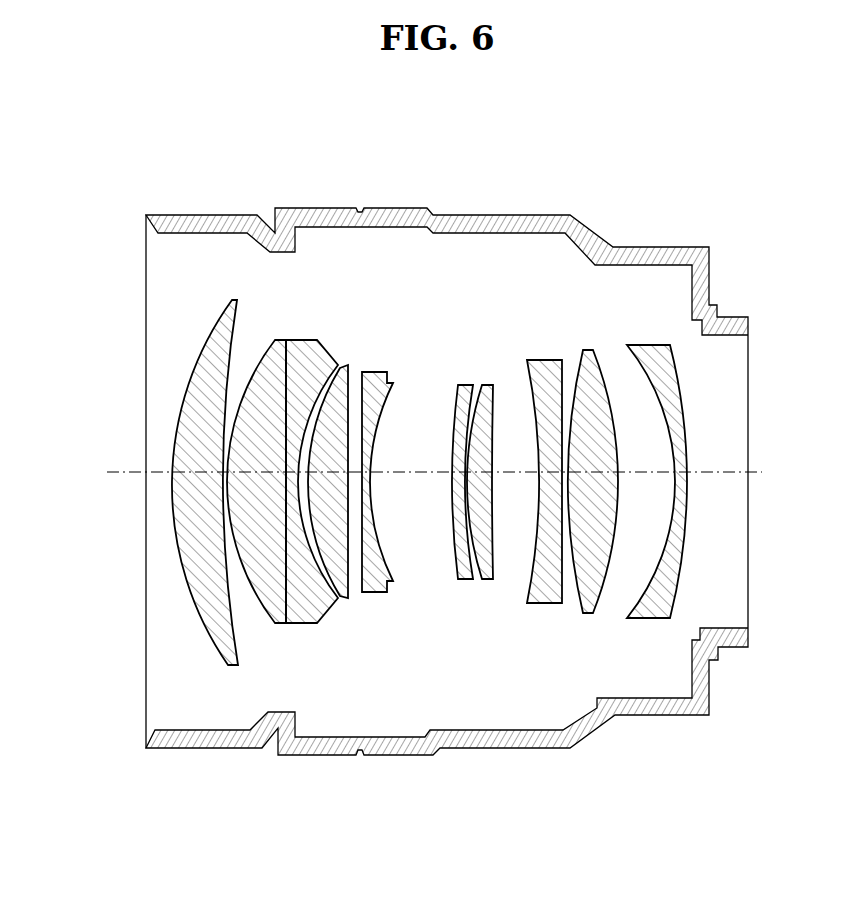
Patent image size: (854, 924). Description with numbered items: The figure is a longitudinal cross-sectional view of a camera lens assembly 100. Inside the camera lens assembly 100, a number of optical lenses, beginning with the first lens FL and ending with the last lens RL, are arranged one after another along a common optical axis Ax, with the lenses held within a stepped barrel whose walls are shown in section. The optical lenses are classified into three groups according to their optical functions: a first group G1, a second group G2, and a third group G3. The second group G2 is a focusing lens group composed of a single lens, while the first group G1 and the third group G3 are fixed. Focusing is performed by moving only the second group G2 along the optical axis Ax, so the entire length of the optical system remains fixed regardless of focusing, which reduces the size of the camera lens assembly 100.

The camera lens assembly 100 is at (477, 100).
The first lens FL is at (233, 297).
The first group G1 is at (318, 648).
The second group G2 is at (380, 356).
The third group G3 is at (542, 634).
The last lens RL is at (662, 345).
The optical axis Ax is at (424, 471).